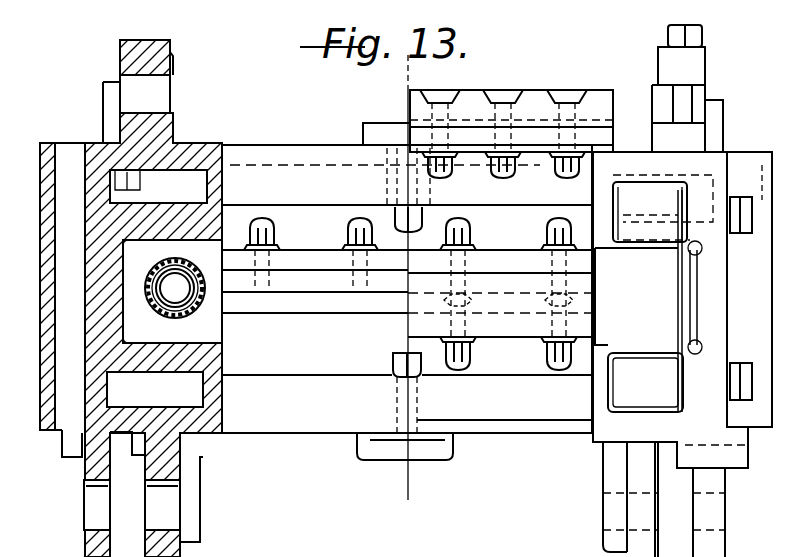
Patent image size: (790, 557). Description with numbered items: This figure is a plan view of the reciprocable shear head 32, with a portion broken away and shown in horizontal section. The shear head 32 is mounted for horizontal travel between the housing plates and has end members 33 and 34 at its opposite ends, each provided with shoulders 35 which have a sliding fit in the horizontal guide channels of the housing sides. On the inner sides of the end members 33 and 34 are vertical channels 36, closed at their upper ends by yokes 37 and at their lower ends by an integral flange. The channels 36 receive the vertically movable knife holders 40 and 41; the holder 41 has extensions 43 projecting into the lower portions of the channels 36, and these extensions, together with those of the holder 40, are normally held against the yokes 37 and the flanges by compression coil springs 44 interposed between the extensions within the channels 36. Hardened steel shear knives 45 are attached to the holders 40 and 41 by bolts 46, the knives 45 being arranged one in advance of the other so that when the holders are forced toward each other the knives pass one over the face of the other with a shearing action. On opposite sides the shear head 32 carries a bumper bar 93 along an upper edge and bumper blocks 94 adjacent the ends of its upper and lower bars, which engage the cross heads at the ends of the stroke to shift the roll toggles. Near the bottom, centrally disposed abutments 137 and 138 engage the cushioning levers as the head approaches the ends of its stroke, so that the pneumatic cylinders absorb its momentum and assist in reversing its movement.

The shear head 32 is at (290, 143).
The end member 33 is at (722, 307).
The end member 34 is at (58, 432).
The shoulders 35 is at (38, 362).
The vertical channels 36 is at (222, 342).
The yokes 37 is at (654, 293).
The knife holder 40 is at (505, 327).
The knife holder 41 is at (315, 238).
The extensions 43 is at (207, 322).
The compression coil springs 44 is at (186, 273).
The shear knives 45 is at (332, 283).
The bolts 46 is at (470, 223).
The bumper bar 93 is at (537, 97).
The bumper blocks 94 is at (107, 93).
The abutment 137 is at (373, 455).
The abutment 138 is at (373, 123).